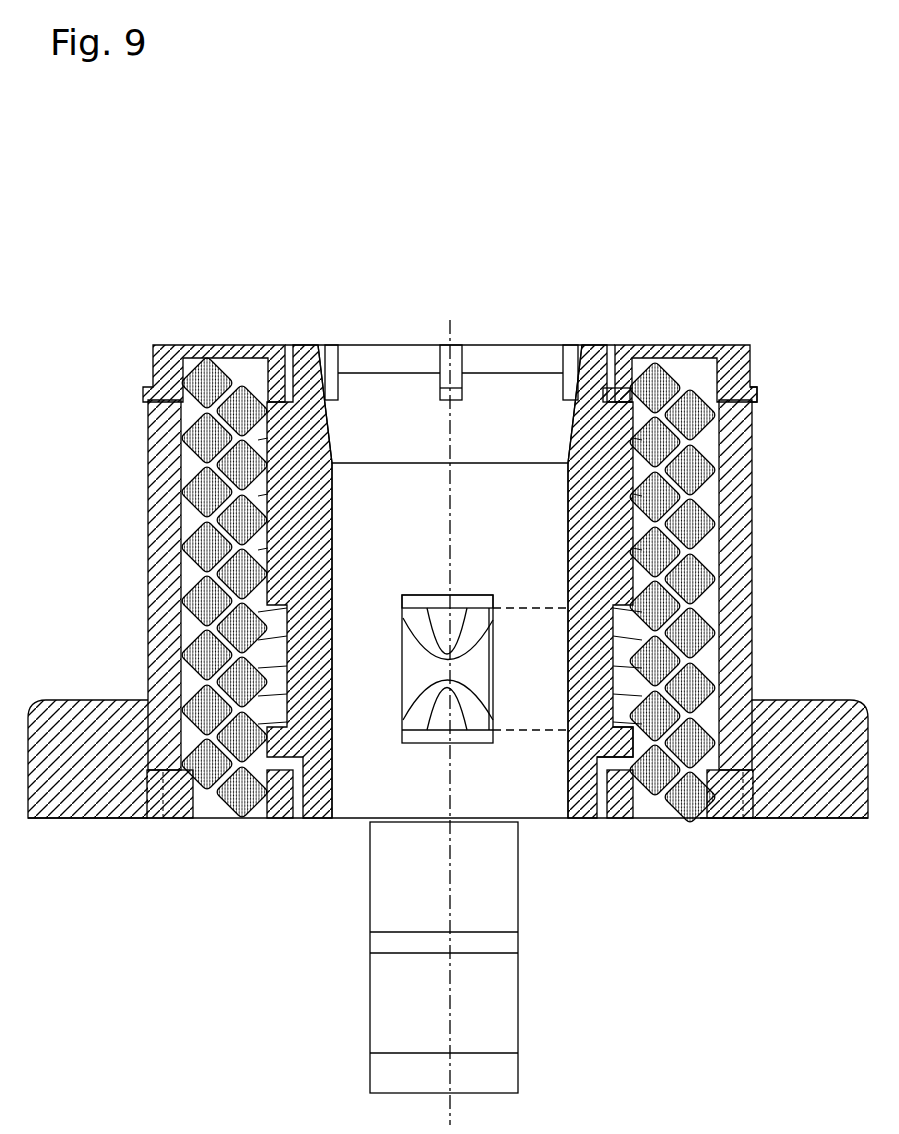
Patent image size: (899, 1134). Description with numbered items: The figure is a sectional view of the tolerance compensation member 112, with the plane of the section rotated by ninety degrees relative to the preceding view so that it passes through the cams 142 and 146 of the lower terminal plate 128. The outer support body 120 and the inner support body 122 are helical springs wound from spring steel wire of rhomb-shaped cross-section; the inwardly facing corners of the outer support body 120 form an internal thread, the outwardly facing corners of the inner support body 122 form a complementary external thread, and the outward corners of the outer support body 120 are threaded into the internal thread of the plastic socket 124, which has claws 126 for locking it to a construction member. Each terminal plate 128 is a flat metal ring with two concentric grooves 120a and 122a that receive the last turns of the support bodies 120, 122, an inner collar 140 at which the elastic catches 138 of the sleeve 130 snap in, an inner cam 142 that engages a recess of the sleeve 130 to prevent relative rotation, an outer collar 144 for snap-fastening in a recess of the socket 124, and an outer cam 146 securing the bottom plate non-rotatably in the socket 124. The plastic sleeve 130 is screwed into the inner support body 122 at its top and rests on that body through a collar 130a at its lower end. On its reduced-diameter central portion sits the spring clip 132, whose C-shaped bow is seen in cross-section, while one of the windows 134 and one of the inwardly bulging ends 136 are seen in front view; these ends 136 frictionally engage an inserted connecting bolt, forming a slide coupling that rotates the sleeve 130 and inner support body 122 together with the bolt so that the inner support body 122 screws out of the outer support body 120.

The tolerance compensation member 112 is at (553, 226).
The outer support body 120 is at (176, 491).
The groove 120a is at (205, 365).
The inner support body 122 is at (277, 519).
The groove 122a is at (655, 347).
The socket 124 is at (148, 606).
The claws 126 is at (520, 1003).
The terminal plate 128 is at (735, 347).
The sleeve 130 is at (578, 495).
The collar 130a is at (582, 740).
The spring clip 132 is at (566, 690).
The windows 134 is at (470, 596).
The ends 136 is at (420, 668).
The catches 138 is at (606, 347).
The collar 140 is at (603, 396).
The cam 142 is at (290, 821).
The collar 144 is at (758, 395).
The cam 146 is at (745, 821).